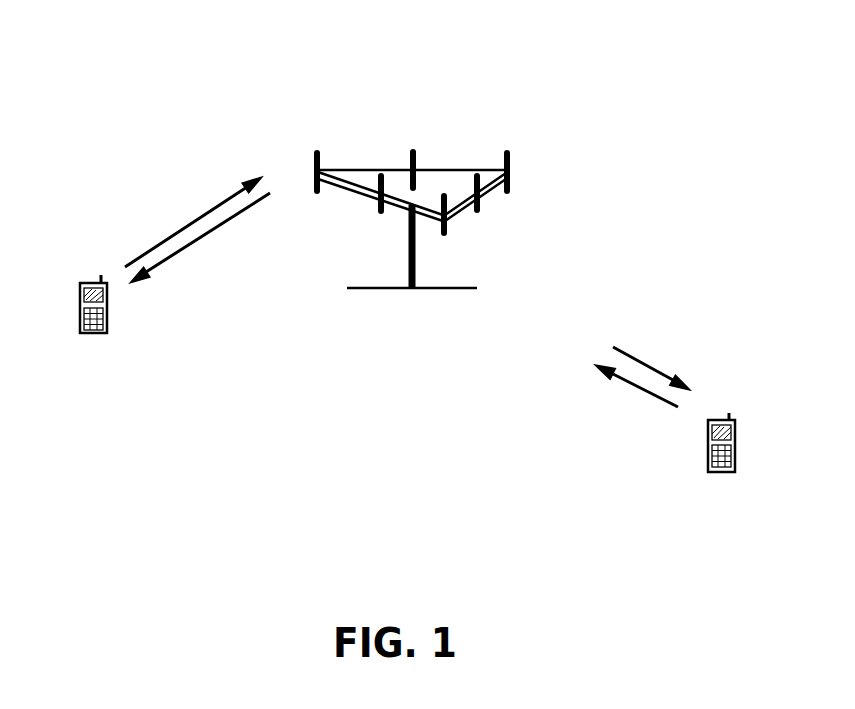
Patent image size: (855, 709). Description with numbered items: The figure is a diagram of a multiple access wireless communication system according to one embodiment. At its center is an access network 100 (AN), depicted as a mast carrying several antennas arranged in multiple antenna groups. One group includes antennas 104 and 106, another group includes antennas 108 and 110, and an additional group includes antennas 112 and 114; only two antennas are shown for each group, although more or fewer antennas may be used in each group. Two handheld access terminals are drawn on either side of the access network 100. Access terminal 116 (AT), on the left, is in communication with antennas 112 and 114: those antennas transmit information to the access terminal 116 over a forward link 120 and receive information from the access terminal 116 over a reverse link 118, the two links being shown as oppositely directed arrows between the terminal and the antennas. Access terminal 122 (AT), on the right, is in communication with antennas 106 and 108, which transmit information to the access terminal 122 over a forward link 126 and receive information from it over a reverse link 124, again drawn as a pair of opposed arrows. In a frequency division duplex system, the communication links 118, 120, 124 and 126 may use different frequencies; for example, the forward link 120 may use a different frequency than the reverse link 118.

The access network 100 is at (392, 290).
The antenna 104 is at (448, 230).
The antenna 106 is at (477, 212).
The antenna 108 is at (510, 188).
The antenna 110 is at (415, 153).
The antenna 112 is at (317, 166).
The antenna 114 is at (380, 212).
The access terminal 116 is at (98, 278).
The reverse link 118 is at (192, 222).
The forward link 120 is at (208, 238).
The access terminal 122 is at (720, 414).
The reverse link 124 is at (627, 380).
The forward link 126 is at (653, 366).